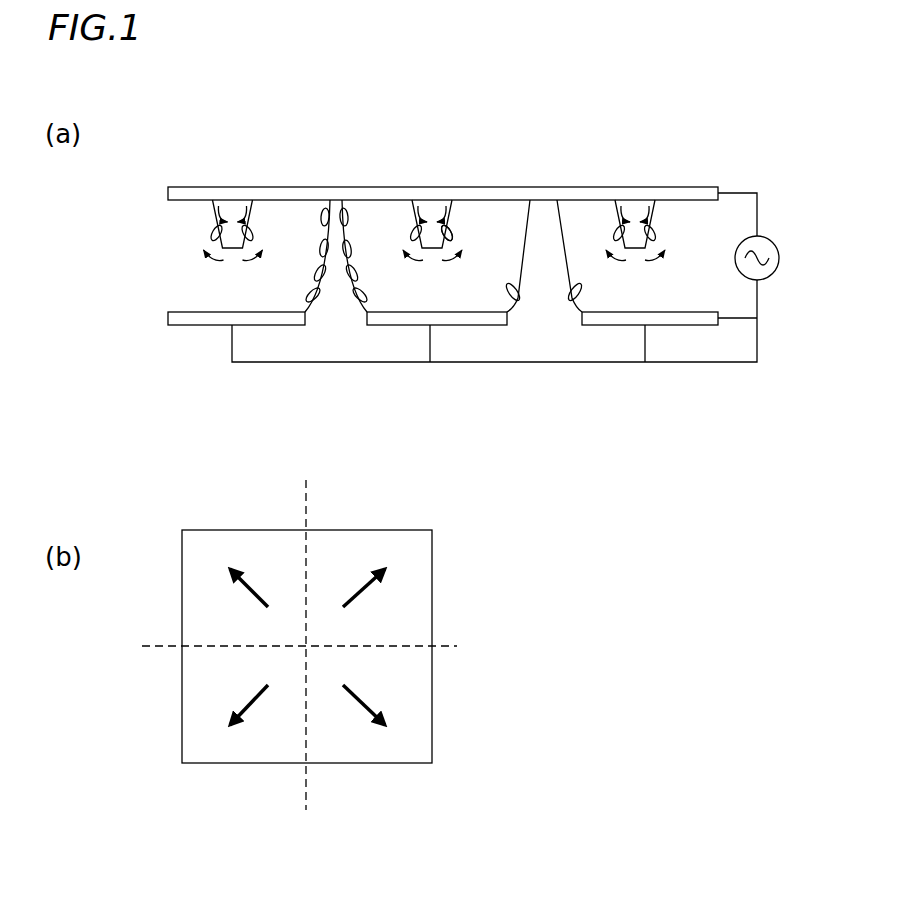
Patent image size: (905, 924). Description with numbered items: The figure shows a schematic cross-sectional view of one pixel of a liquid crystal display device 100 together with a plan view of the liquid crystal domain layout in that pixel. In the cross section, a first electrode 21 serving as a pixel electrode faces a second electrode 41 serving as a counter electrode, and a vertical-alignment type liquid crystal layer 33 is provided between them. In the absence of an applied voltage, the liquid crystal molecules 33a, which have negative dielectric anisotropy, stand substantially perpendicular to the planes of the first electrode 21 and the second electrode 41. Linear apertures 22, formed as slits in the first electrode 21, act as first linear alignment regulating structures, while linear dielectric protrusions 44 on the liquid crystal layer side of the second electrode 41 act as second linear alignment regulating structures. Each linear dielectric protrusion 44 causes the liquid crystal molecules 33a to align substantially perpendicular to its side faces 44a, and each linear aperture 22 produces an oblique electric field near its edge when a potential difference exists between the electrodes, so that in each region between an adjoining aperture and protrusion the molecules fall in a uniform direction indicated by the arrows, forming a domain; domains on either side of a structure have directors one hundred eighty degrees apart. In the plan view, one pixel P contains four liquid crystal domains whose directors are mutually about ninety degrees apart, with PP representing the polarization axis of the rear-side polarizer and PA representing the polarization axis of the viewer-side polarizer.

The liquid crystal display device 100 is at (721, 146).
The second electrode 41 is at (625, 186).
The linear dielectric protrusions 44 is at (432, 208).
The side faces 44a is at (448, 220).
The liquid crystal molecules 33a is at (210, 237).
The liquid crystal layer 33 is at (192, 288).
The linear apertures 22 is at (341, 317).
The first electrode 21 is at (670, 325).
The pixel P is at (432, 580).
The polarization axis of the viewer's side polarizer PA is at (326, 645).
The polarization axis of the rear face side polarizer PP is at (326, 653).